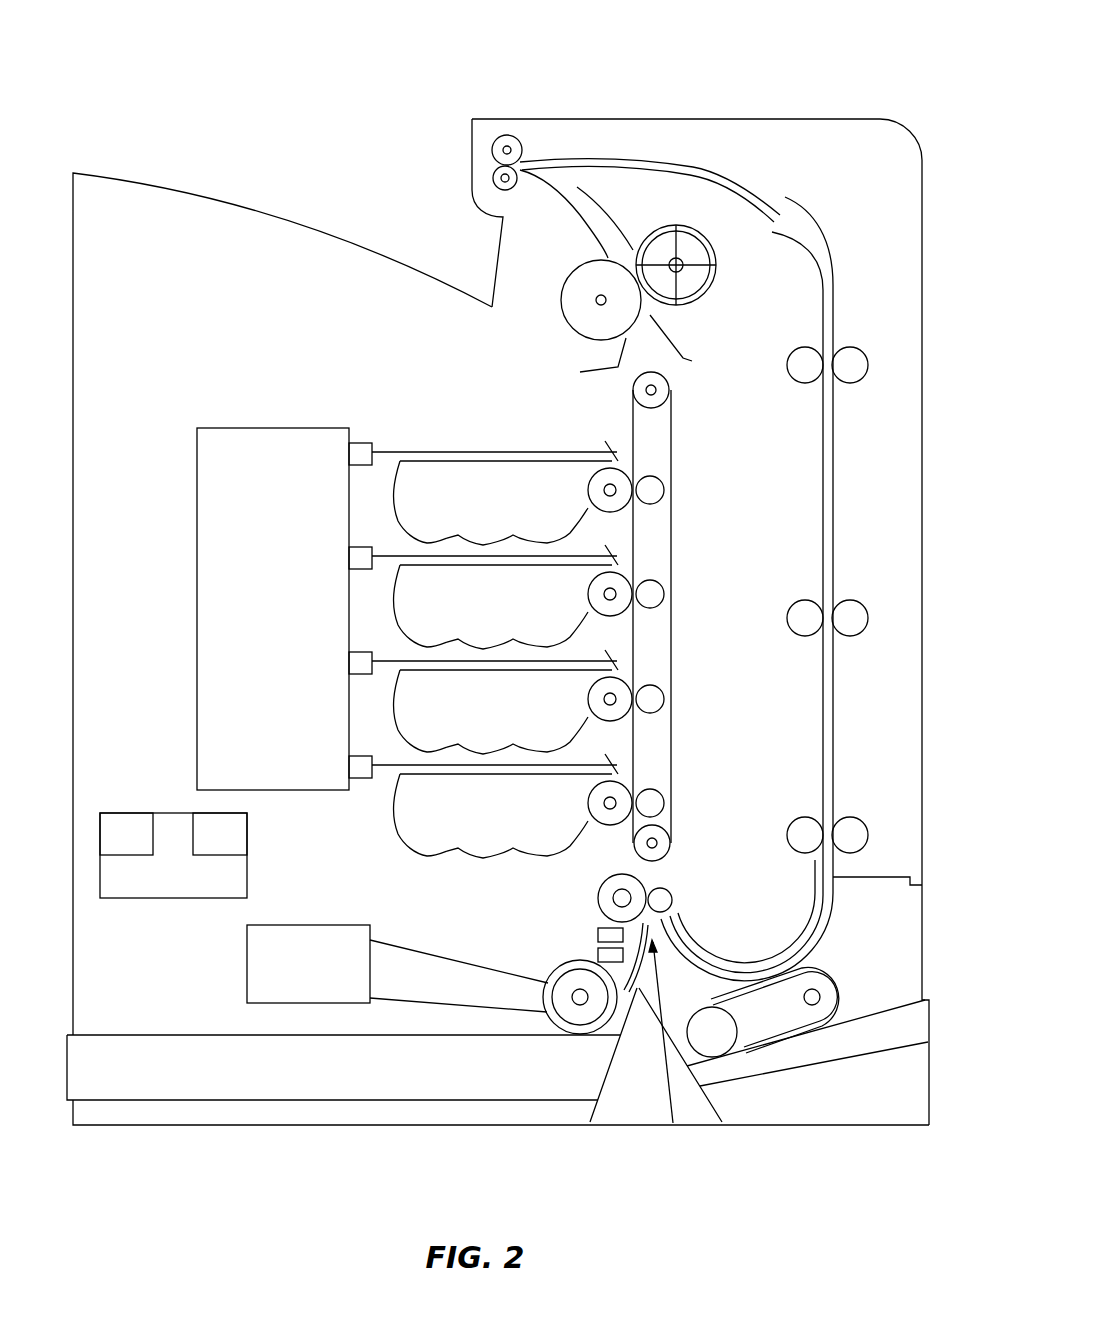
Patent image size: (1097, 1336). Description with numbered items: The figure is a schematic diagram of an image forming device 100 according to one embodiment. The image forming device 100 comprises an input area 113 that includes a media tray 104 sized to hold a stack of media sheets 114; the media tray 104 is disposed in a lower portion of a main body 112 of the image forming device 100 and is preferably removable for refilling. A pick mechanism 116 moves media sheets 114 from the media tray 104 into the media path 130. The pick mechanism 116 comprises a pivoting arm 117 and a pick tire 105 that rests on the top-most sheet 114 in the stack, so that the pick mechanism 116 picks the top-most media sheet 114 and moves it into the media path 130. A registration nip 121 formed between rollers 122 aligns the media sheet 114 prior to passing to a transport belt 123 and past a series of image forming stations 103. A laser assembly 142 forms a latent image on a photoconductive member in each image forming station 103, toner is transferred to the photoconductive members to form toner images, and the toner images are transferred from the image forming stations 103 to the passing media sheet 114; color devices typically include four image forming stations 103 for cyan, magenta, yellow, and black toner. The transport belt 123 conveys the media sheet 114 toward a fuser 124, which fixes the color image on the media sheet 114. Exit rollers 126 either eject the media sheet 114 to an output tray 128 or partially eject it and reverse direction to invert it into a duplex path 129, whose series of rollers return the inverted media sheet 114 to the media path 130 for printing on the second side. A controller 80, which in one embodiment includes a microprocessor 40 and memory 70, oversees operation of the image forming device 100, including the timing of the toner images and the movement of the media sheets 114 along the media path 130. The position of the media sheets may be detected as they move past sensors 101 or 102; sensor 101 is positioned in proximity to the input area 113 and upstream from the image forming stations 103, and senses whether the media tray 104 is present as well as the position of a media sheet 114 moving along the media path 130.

The image forming device 100 is at (727, 80).
The main body 112 is at (800, 119).
The output tray 128 is at (233, 208).
The media tray 104 is at (257, 1100).
The media sheets 114 is at (328, 1076).
The exit rollers 126 is at (521, 149).
The fuser 124 is at (574, 270).
The laser assembly 142 is at (248, 611).
The image forming stations 103 is at (470, 505).
The transport belt 123 is at (678, 772).
The duplex path 129 is at (835, 730).
The registration nip 121 is at (656, 878).
The rollers 122 is at (614, 878).
The media path 130 is at (673, 1123).
The sensor 102 is at (598, 932).
The sensor 101 is at (598, 955).
The pick tire 105 is at (556, 973).
The pick mechanism 116 is at (420, 925).
The pivoting arm 117 is at (420, 957).
The input area 113 is at (235, 1017).
The controller 80 is at (158, 891).
The microprocessor 40 is at (113, 848).
The memory 70 is at (206, 848).